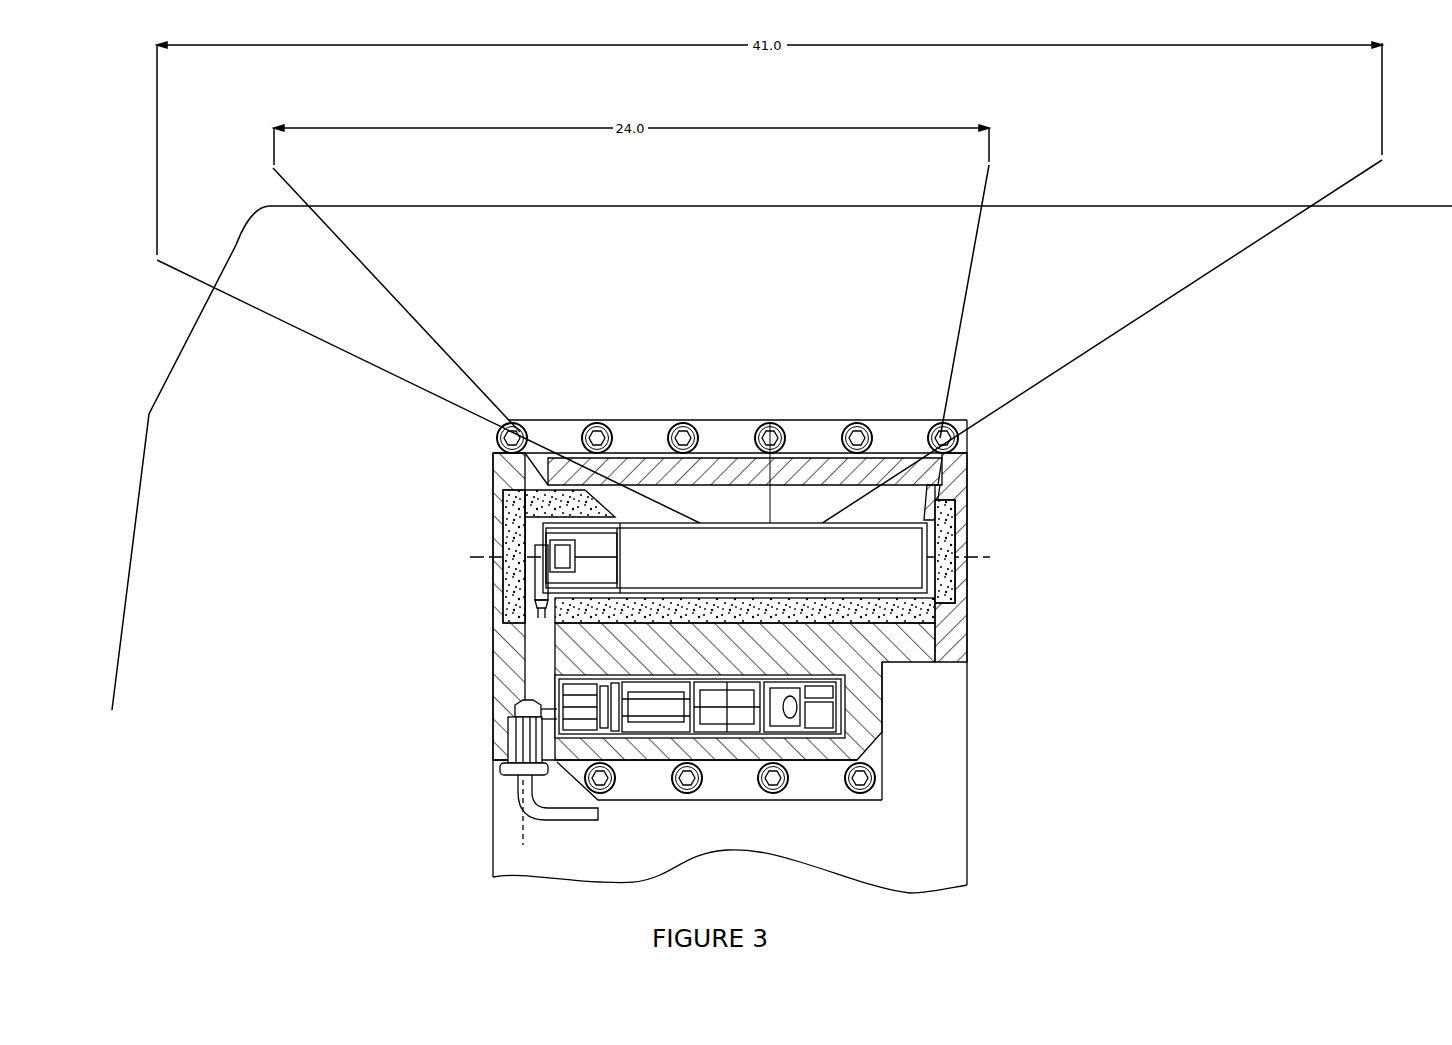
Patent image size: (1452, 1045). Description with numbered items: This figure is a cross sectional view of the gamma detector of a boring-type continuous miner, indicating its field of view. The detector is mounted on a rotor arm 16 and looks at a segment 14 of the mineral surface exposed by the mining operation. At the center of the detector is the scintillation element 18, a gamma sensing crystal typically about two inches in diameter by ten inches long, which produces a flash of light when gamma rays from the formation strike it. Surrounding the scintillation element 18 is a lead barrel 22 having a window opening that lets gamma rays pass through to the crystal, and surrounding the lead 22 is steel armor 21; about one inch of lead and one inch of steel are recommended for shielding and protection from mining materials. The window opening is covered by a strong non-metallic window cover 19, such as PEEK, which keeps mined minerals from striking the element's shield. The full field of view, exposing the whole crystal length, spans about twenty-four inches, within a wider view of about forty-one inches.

The segment 14 is at (782, 431).
The rotor arm 16 is at (730, 777).
The scintillation element 18 is at (731, 570).
The window cover 19 is at (745, 471).
The armor 21 is at (730, 652).
The lead barrel 22 is at (731, 556).